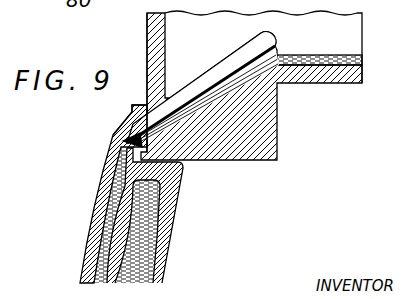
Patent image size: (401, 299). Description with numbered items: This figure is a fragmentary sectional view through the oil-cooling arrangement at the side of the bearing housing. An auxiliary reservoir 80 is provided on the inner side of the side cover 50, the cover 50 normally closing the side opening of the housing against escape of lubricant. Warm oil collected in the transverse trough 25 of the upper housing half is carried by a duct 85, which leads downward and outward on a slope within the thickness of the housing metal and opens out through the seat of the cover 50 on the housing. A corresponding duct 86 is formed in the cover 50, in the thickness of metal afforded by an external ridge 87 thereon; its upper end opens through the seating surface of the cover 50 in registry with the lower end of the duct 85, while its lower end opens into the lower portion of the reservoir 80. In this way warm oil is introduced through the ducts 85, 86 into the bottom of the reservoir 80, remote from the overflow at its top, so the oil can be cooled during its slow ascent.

The transverse flange 25 is at (329, 68).
The cover plate 50 is at (133, 108).
The auxiliary reservoir 80 is at (151, 254).
The duct 85 is at (221, 80).
The duct 86 is at (100, 247).
The external ridge 87 is at (92, 211).